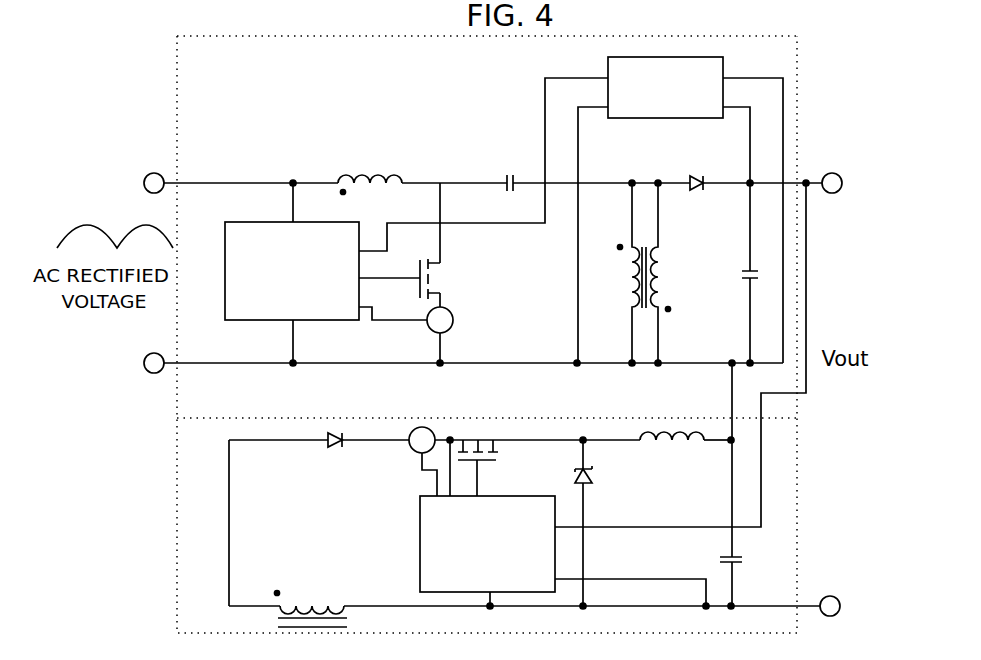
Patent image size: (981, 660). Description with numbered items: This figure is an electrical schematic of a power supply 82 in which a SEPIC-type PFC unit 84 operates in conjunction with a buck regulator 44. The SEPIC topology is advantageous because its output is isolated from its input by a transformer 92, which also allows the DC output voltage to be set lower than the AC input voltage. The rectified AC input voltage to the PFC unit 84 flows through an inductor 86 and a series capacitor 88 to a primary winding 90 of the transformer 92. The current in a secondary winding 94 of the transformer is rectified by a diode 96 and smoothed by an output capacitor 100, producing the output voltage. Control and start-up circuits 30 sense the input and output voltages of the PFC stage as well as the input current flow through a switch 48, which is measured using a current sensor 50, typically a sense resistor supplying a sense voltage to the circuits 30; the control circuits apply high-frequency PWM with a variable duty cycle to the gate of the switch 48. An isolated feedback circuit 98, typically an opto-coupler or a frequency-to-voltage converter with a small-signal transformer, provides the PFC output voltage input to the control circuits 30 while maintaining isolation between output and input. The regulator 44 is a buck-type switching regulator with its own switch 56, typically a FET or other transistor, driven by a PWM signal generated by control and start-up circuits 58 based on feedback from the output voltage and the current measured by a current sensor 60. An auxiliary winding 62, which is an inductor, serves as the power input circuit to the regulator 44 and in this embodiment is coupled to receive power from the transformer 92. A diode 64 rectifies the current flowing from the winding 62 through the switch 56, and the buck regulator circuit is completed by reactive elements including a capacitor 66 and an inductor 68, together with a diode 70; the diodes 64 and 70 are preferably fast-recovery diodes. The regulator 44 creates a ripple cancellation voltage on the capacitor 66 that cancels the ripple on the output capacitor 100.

The control and start-up circuits 30 is at (228, 321).
The regulator 44 is at (797, 497).
The switch 48 is at (442, 277).
The current sensor 50 is at (453, 323).
The switch 56 is at (470, 440).
The control and start-up circuits 58 is at (420, 550).
The current sensor 60 is at (430, 428).
The auxiliary winding 62 is at (324, 601).
The diode 64 is at (337, 447).
The capacitor 66 is at (744, 560).
The inductor 68 is at (650, 441).
The diode 70 is at (590, 481).
The power supply 82 is at (814, 79).
The SEPIC-type PFC unit 84 is at (360, 35).
The inductor 86 is at (338, 180).
The series capacitor 88 is at (506, 179).
The primary winding 90 is at (633, 286).
The transformer 92 is at (660, 273).
The secondary winding 94 is at (674, 250).
The diode 96 is at (689, 181).
The isolated feedback circuit 98 is at (623, 119).
The output capacitor 100 is at (750, 284).